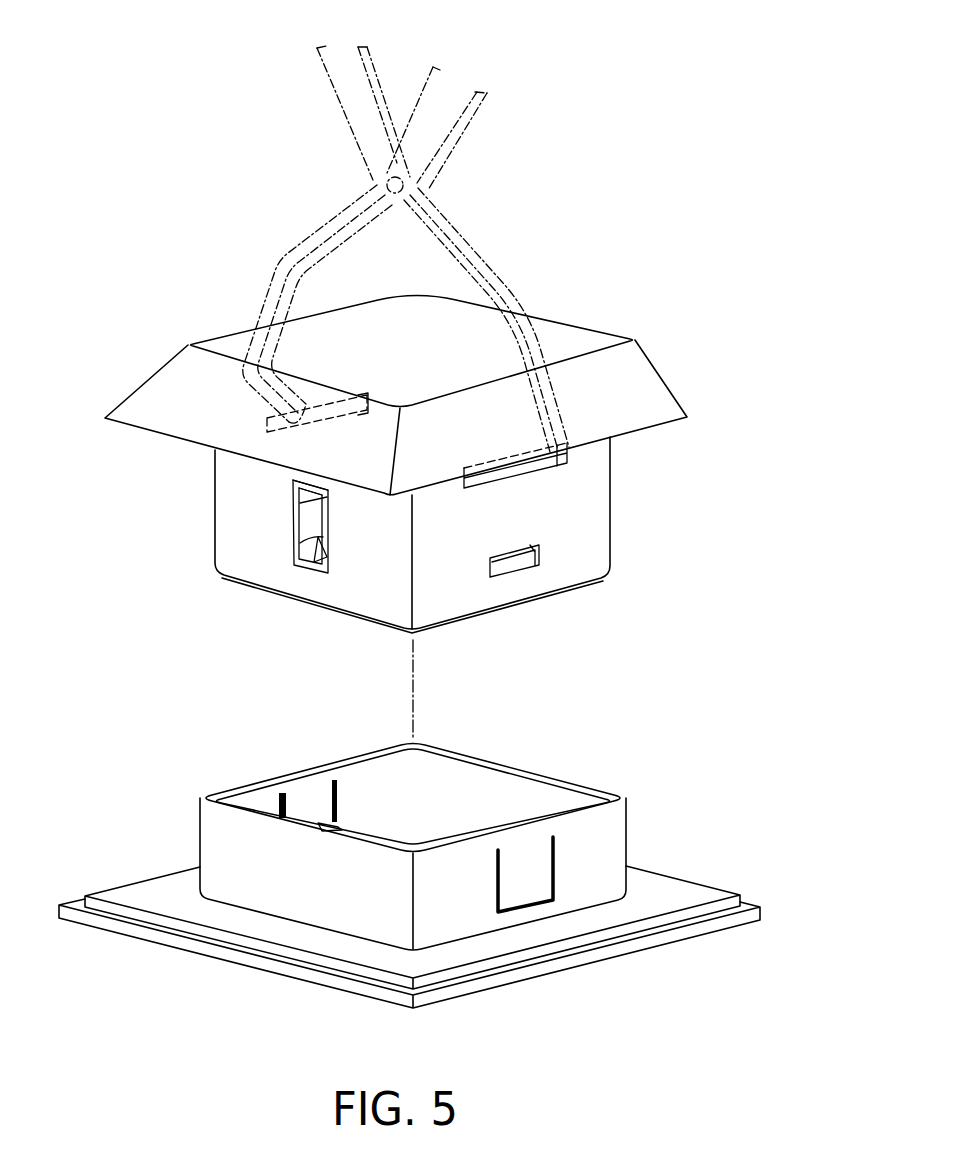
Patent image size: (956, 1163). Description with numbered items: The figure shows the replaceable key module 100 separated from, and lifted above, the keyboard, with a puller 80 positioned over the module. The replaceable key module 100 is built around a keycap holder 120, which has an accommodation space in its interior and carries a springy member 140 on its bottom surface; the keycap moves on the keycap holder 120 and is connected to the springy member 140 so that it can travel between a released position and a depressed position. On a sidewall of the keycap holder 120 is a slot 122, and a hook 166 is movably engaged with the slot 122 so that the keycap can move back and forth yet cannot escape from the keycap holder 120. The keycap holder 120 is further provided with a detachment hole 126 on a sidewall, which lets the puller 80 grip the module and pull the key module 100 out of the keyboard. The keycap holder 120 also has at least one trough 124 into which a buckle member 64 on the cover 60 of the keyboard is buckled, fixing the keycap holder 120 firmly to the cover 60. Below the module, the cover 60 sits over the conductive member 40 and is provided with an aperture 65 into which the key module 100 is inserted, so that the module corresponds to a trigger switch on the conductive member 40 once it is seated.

The conductive member 40 is at (647, 938).
The cover 60 is at (429, 863).
The buckle member 64 is at (300, 802).
The aperture 65 is at (490, 783).
The puller 80 is at (445, 100).
The replaceable key module 100 is at (433, 447).
The keycap holder 120 is at (375, 524).
The slot 122 is at (295, 536).
The trough 124 is at (507, 565).
The detachment hole 126 is at (267, 424).
The springy member 140 is at (313, 567).
The hook 166 is at (293, 482).